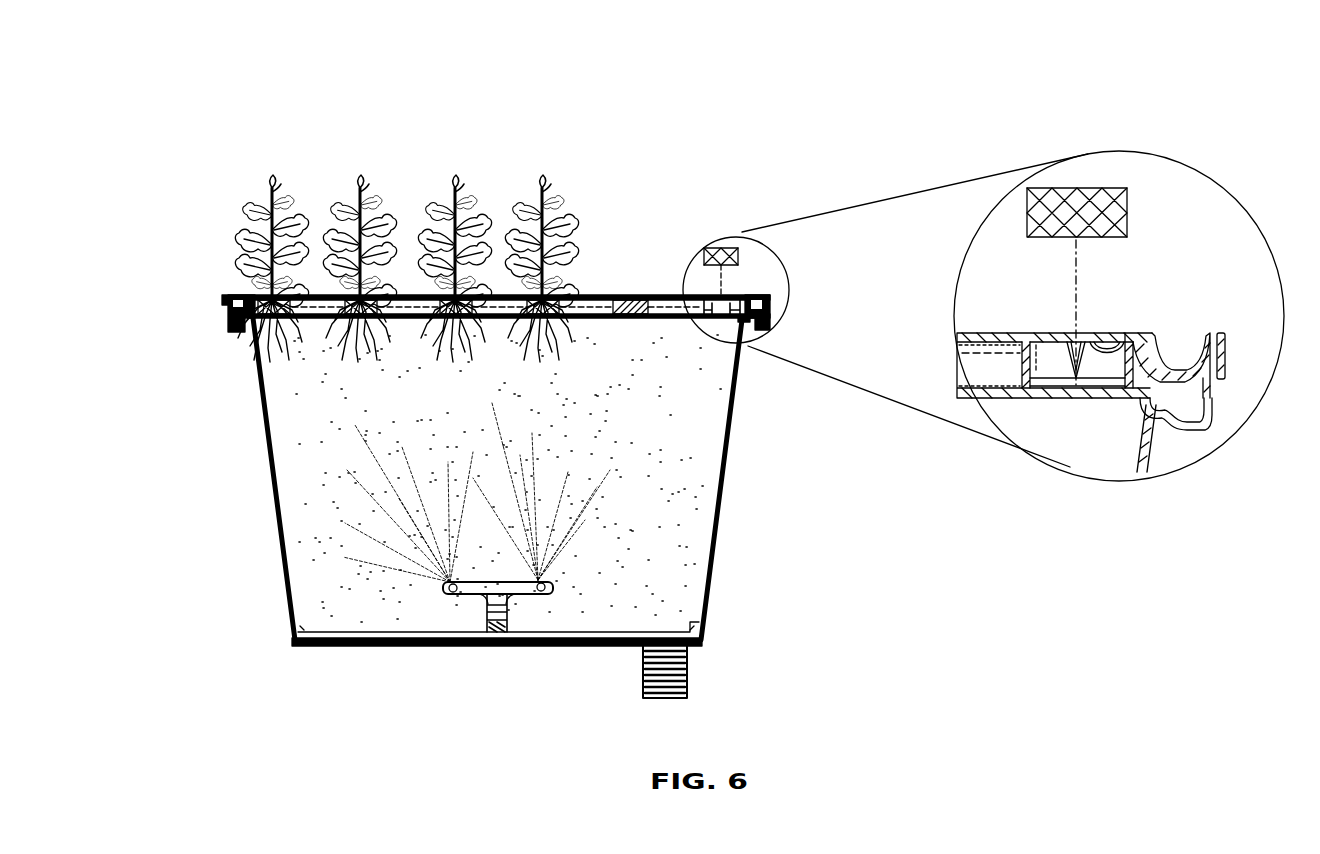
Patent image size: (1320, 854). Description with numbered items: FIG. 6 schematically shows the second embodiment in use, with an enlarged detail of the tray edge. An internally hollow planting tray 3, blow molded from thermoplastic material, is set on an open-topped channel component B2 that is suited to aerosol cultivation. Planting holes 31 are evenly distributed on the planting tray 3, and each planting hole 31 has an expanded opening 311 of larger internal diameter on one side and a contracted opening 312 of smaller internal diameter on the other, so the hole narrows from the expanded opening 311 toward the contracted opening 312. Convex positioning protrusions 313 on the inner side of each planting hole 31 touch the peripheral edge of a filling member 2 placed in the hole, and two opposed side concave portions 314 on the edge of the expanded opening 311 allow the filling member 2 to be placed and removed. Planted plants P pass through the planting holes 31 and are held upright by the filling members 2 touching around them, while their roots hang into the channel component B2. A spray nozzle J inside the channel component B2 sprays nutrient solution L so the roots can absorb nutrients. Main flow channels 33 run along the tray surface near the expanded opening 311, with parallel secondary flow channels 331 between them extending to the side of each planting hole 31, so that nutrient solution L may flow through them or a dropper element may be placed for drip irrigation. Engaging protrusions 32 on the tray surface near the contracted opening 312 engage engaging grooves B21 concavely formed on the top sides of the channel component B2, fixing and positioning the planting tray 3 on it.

The planted plant P is at (520, 205).
The spray nozzle J is at (483, 607).
The nutrient solution L is at (651, 440).
The channel component B2 is at (740, 405).
The engaging groove B21 is at (1203, 400).
The filling member 2 is at (704, 256).
The planting tray 3 is at (598, 296).
The planting hole 31 is at (702, 297).
The expanded opening 311 is at (1042, 358).
The contracted opening 312 is at (1065, 398).
The positioning protrusion 313 is at (1091, 398).
The side concave portion 314 is at (1112, 338).
The engaging protrusion 32 is at (1185, 428).
The main flow channel 33 is at (756, 297).
The secondary flow channel 331 is at (998, 350).